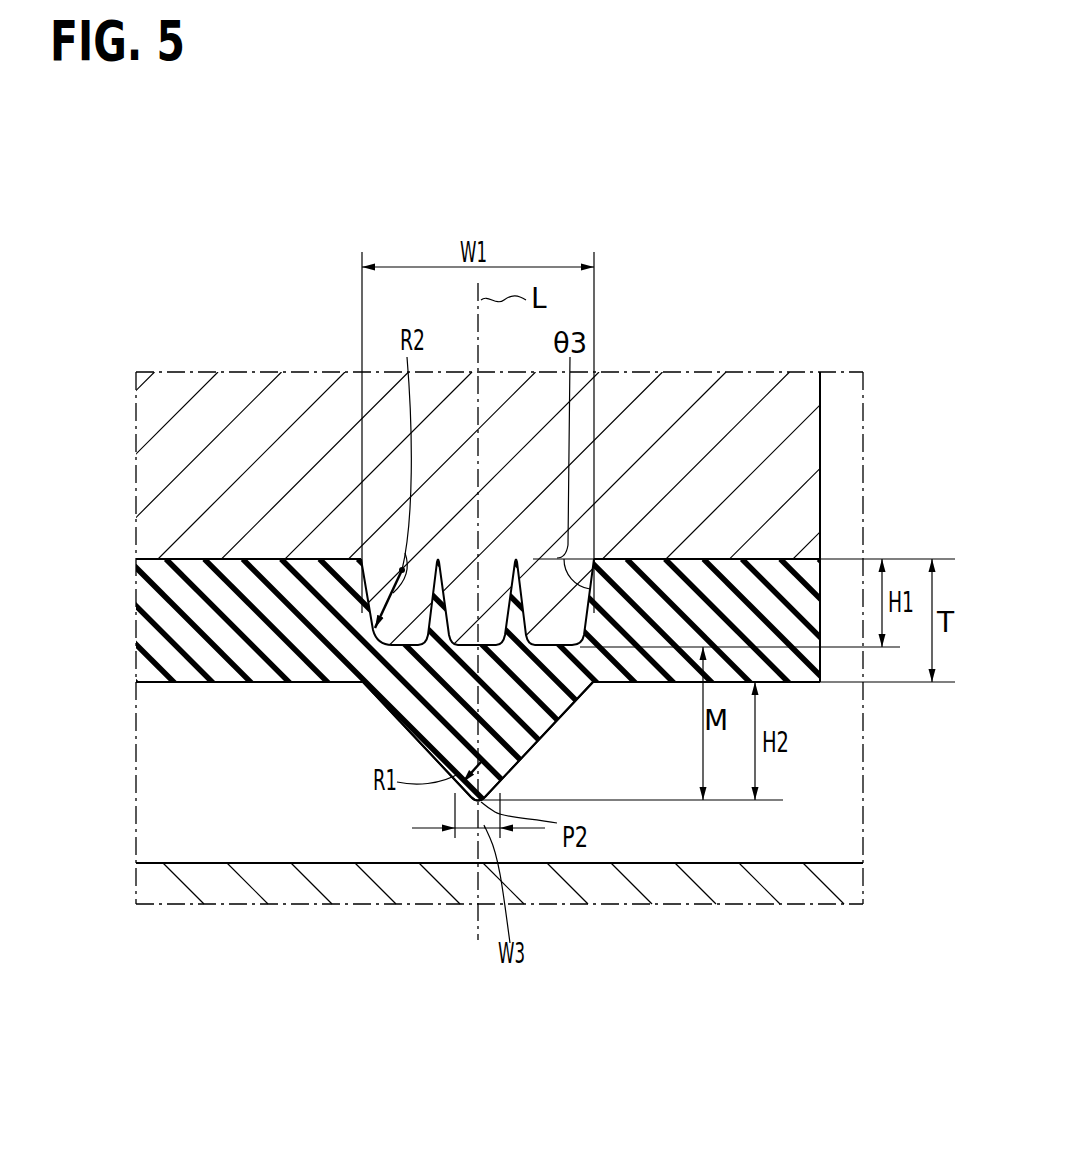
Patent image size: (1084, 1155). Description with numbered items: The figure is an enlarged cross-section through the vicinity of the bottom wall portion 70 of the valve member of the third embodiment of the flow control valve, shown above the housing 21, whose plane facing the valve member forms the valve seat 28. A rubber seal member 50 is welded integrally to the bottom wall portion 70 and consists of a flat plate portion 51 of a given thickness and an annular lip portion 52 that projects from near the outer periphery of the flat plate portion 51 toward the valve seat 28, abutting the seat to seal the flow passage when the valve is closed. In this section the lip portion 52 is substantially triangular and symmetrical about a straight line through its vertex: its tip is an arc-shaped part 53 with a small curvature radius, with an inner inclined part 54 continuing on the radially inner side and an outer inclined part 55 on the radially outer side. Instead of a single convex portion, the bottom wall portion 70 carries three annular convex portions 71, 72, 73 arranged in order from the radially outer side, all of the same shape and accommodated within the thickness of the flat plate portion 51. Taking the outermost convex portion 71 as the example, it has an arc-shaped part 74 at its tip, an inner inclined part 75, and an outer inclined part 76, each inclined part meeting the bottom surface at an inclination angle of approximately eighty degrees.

The housing 21 is at (523, 876).
The valve seat 28 is at (819, 862).
The rubber seal member 50 is at (540, 643).
The flat plate portion 51 is at (293, 677).
The lip portion 52 is at (433, 737).
The arc-shaped part 53 is at (471, 803).
The inner inclined part 54 is at (393, 712).
The outer inclined part 55 is at (542, 738).
The bottom wall portion 70 is at (753, 393).
The convex portion 71 is at (505, 632).
The convex portion 72 is at (465, 622).
The convex portion 73 is at (350, 600).
The arc-shaped part 74 is at (583, 642).
The inner inclined part 75 is at (503, 625).
The outer inclined part 76 is at (575, 622).